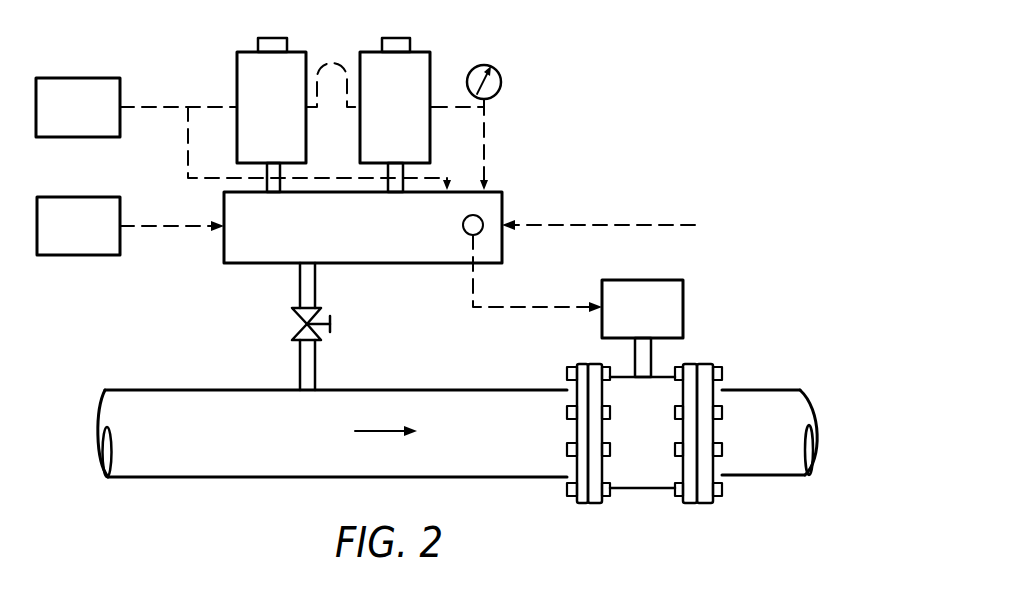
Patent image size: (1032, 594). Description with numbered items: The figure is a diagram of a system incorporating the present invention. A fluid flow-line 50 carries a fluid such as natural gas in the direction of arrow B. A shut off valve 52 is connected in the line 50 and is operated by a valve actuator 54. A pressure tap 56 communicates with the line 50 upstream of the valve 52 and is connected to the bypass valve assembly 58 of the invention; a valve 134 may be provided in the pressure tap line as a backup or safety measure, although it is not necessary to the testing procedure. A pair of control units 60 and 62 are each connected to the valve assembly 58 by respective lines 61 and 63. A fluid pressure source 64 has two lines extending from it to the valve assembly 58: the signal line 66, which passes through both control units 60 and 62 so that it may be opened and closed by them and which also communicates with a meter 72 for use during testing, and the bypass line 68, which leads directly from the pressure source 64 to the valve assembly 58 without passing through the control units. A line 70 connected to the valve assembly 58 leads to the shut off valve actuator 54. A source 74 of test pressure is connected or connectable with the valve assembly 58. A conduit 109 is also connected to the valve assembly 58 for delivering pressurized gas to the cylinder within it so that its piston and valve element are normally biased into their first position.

The fluid flow-line 50 is at (493, 477).
The shut off valve 52 is at (645, 488).
The valve actuator 54 is at (683, 312).
The pressure tap 56 is at (316, 369).
The bypass valve assembly 58 is at (224, 248).
The control unit 60 is at (237, 63).
The line 61 is at (282, 176).
The control unit 62 is at (428, 52).
The line 63 is at (405, 176).
The fluid pressure source 64 is at (78, 78).
The signal line 66 is at (446, 105).
The bypass line 68 is at (188, 141).
The line 70 is at (520, 307).
The meter 72 is at (500, 77).
The source of test pressure 74 is at (88, 197).
The conduit 109 is at (588, 225).
The valve 134 is at (317, 308).
The arrow B is at (380, 431).